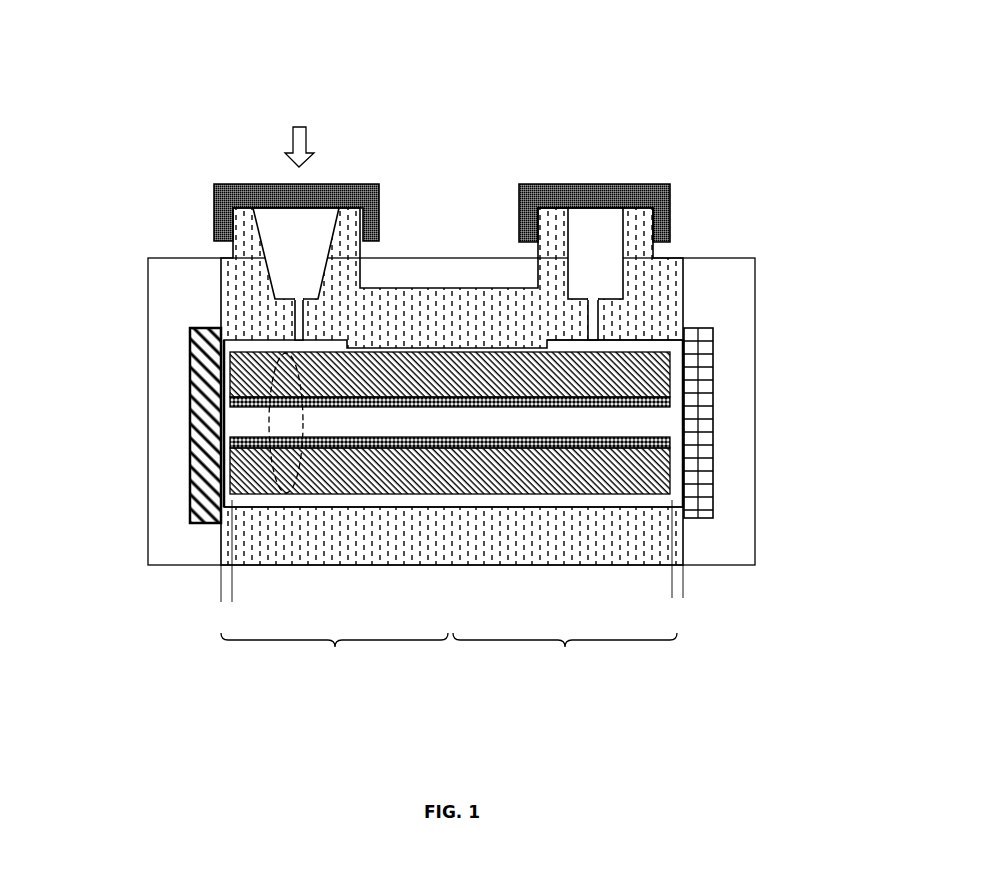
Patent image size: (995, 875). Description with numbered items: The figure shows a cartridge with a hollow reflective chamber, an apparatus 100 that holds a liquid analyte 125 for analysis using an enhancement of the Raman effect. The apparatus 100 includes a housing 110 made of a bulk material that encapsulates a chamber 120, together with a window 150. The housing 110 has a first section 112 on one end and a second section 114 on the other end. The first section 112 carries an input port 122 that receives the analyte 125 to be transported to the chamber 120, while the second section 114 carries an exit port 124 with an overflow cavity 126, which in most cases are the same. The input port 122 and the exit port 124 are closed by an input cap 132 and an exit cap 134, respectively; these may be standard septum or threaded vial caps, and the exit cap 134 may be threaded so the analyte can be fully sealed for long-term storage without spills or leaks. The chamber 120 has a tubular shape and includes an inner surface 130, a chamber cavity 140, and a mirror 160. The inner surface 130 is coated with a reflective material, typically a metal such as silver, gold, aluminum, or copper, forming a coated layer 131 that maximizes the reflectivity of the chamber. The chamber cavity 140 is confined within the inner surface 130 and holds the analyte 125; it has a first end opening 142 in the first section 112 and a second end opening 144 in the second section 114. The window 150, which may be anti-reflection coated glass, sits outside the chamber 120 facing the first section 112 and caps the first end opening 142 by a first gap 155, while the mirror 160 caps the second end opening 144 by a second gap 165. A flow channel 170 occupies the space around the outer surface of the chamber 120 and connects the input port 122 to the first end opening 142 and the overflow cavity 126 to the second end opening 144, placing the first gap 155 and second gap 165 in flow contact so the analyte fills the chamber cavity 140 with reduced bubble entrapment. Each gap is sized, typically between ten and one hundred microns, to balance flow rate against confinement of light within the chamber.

The apparatus 100 is at (720, 82).
The housing 110 is at (410, 333).
The first section 112 is at (334, 673).
The second section 114 is at (565, 673).
The chamber 120 is at (303, 468).
The input port 122 is at (285, 203).
The exit port 124 is at (582, 203).
The analyte 125 is at (299, 131).
The overflow cavity 126 is at (597, 255).
The inner surface 130 is at (394, 403).
The coated layer 131 is at (513, 410).
The input cap 132 is at (363, 197).
The exit cap 134 is at (655, 197).
The chamber cavity 140 is at (447, 427).
The first end opening 142 is at (228, 432).
The second end opening 144 is at (675, 430).
The window 150 is at (200, 415).
The first gap 155 is at (263, 588).
The mirror 160 is at (697, 427).
The second gap 165 is at (712, 582).
The flow channel 170 is at (639, 344).